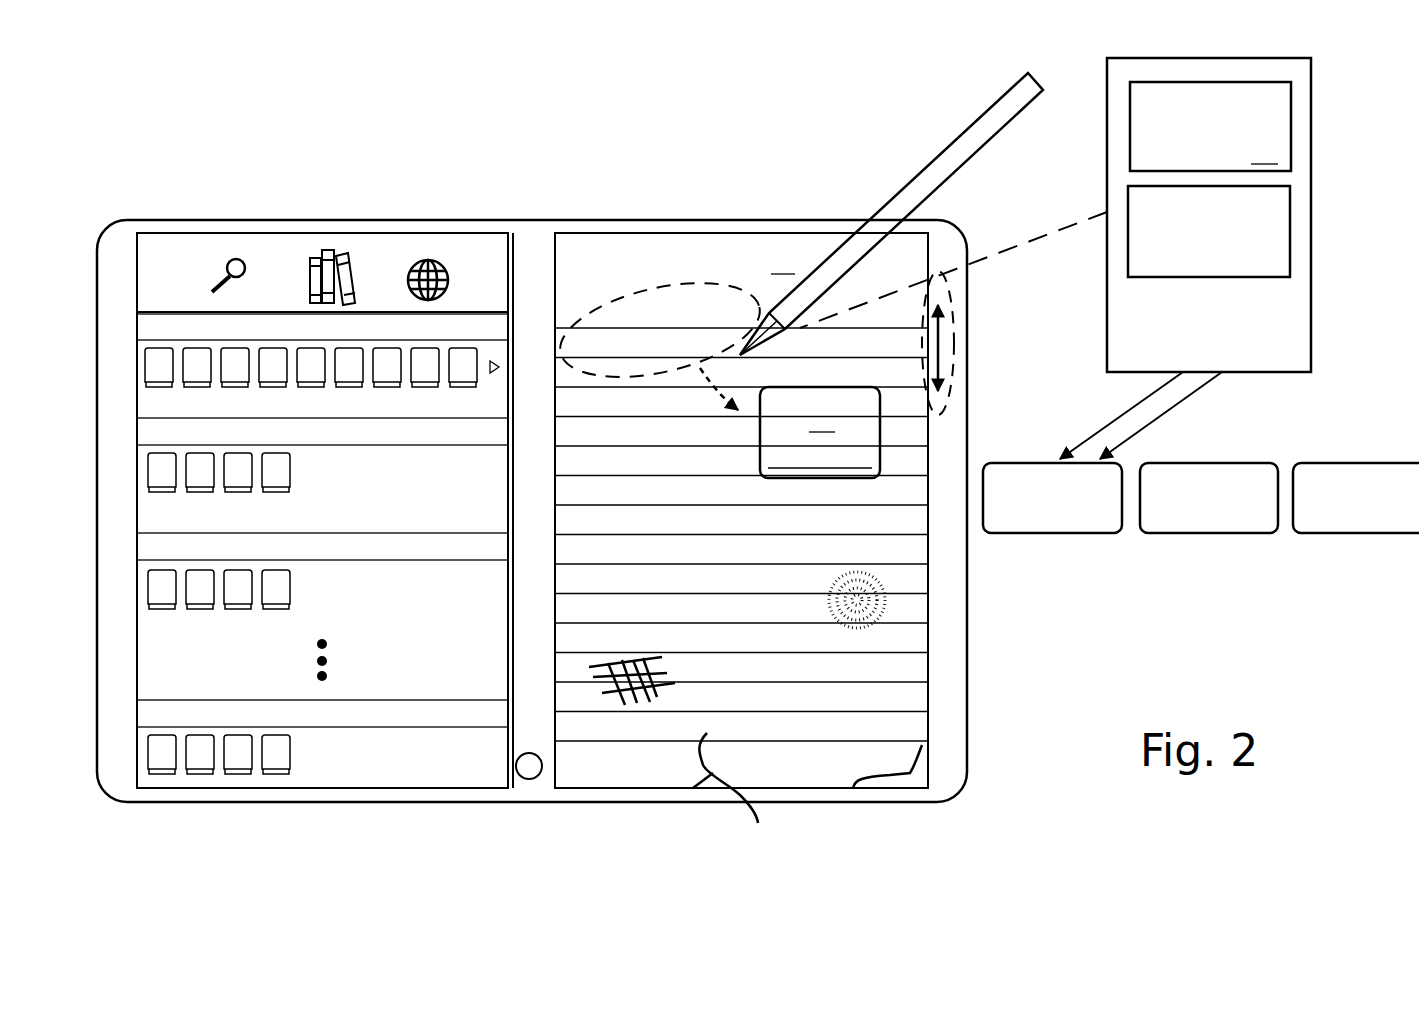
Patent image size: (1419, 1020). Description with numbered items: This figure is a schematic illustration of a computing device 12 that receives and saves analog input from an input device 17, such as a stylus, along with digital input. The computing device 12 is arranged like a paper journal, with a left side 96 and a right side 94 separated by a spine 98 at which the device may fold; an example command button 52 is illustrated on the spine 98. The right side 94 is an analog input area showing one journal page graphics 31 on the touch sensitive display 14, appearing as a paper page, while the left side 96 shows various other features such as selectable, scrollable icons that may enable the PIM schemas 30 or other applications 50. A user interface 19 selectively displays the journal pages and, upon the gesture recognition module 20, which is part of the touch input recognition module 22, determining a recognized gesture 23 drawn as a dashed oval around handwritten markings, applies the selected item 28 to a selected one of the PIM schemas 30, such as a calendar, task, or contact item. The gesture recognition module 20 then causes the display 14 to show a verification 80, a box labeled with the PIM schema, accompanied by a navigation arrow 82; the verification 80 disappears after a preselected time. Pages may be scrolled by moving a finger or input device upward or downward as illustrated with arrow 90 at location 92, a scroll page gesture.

The computing device 12 is at (183, 104).
The touch sensitive display 14 is at (447, 232).
The left side 96 is at (295, 122).
The other PIM schemas / other applications 50 is at (220, 275).
The spine 98 is at (527, 272).
The command button 52 is at (538, 778).
The right side 94 is at (776, 115).
The journal page graphics 31 is at (782, 263).
The selected item 28 is at (616, 316).
The recognized gesture 23 is at (670, 295).
The user interface 19 is at (628, 170).
The input device 17 is at (960, 166).
The navigation arrow 82 is at (718, 372).
The verification 80 is at (820, 432).
The location 92 is at (954, 298).
The arrow 90 is at (962, 345).
The touch input recognition module 22 is at (1247, 215).
The gesture recognition module 20 is at (1311, 113).
The PIM schemas 30 is at (1315, 418).